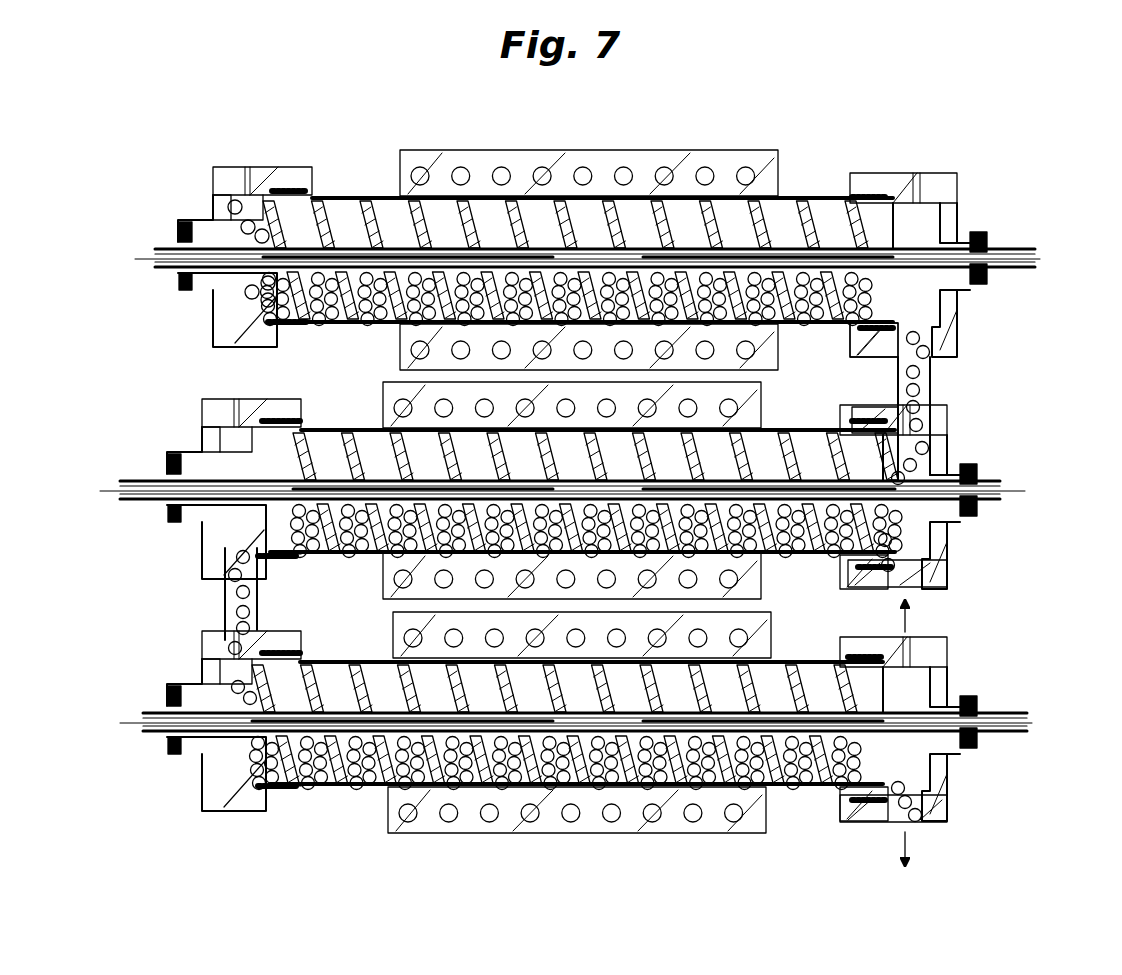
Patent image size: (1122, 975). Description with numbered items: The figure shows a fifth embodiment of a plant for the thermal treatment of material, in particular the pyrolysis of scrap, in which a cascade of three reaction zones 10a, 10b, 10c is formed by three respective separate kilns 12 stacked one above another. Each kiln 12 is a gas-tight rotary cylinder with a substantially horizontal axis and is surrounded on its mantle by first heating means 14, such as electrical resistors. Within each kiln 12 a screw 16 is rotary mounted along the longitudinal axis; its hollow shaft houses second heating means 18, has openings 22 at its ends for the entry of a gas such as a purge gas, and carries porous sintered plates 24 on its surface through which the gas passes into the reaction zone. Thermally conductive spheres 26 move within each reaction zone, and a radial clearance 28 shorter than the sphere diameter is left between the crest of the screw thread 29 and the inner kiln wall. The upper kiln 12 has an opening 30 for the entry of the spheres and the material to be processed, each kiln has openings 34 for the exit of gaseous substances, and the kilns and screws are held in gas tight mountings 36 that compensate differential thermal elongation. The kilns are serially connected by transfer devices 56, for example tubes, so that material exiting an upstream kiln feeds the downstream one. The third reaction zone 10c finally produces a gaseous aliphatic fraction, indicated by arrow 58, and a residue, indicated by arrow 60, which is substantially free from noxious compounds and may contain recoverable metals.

The first reaction zone 10a is at (312, 340).
The second reaction zone 10b is at (283, 578).
The third reaction zone 10c is at (380, 785).
The kiln 12 is at (322, 197).
The first heating means 14 is at (750, 170).
The screw 16 is at (990, 267).
The second heating means 18 is at (1035, 266).
The openings 22 is at (1035, 249).
The porous sintered plates 24 is at (355, 218).
The spheres 26 is at (850, 345).
The radial clearance 28 is at (385, 210).
The screw thread 29 is at (795, 215).
The opening 30 is at (225, 205).
The openings 34 is at (247, 167).
The gas tight mountings 36 is at (213, 200).
The transfer devices 56 is at (932, 380).
The arrow 58 is at (910, 618).
The arrow 60 is at (908, 860).